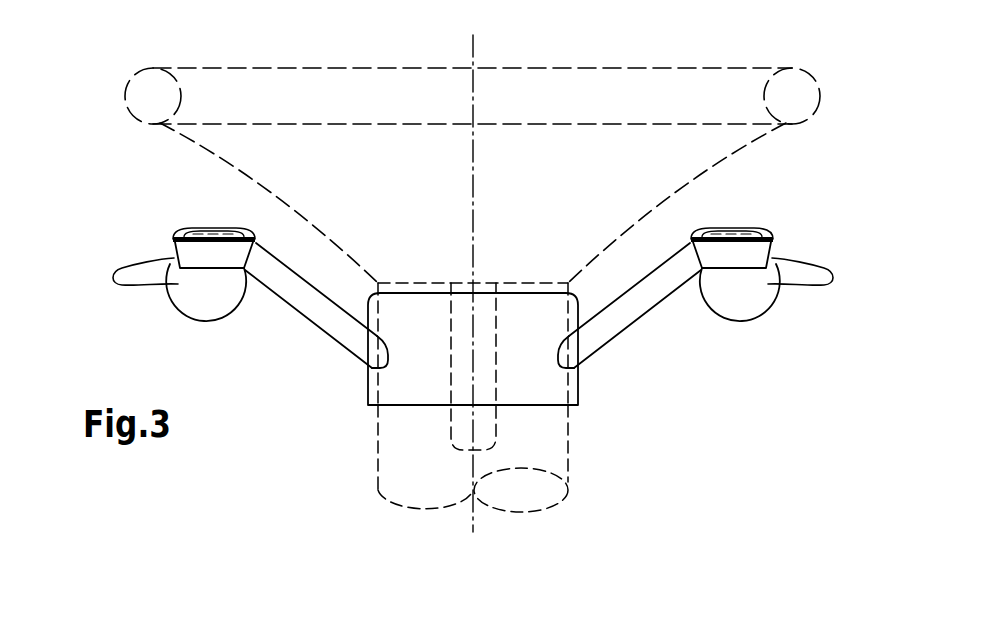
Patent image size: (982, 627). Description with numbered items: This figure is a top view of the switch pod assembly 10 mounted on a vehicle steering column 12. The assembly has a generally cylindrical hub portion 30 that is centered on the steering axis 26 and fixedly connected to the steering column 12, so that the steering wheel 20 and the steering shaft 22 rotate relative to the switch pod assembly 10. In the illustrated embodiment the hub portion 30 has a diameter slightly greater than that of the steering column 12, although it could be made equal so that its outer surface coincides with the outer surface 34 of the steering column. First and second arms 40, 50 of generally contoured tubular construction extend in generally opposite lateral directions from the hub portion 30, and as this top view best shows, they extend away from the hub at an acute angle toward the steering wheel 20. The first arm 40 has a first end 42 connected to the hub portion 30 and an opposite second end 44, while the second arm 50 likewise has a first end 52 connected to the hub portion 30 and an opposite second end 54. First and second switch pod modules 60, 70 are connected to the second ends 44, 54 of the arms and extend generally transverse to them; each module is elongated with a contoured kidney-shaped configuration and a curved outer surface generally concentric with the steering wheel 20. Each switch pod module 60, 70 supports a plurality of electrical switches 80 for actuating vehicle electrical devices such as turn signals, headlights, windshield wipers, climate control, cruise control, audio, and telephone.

The switch pod assembly 10 is at (240, 481).
The steering column 12 is at (378, 450).
The steering wheel 20 is at (258, 100).
The steering shaft 22 is at (450, 428).
The steering axis 26 is at (473, 518).
The hub portion 30 is at (525, 338).
The outer surface of the steering column 34 is at (570, 457).
The first arm 40 is at (302, 296).
The first end of the first arm 42 is at (356, 345).
The second end of the first arm 44 is at (262, 268).
The second arm 50 is at (648, 297).
The first end of the second arm 52 is at (588, 378).
The second end of the second arm 54 is at (697, 272).
The first switch pod module 60 is at (203, 257).
The second switch pod module 70 is at (742, 258).
The electrical switches 80 is at (200, 227).